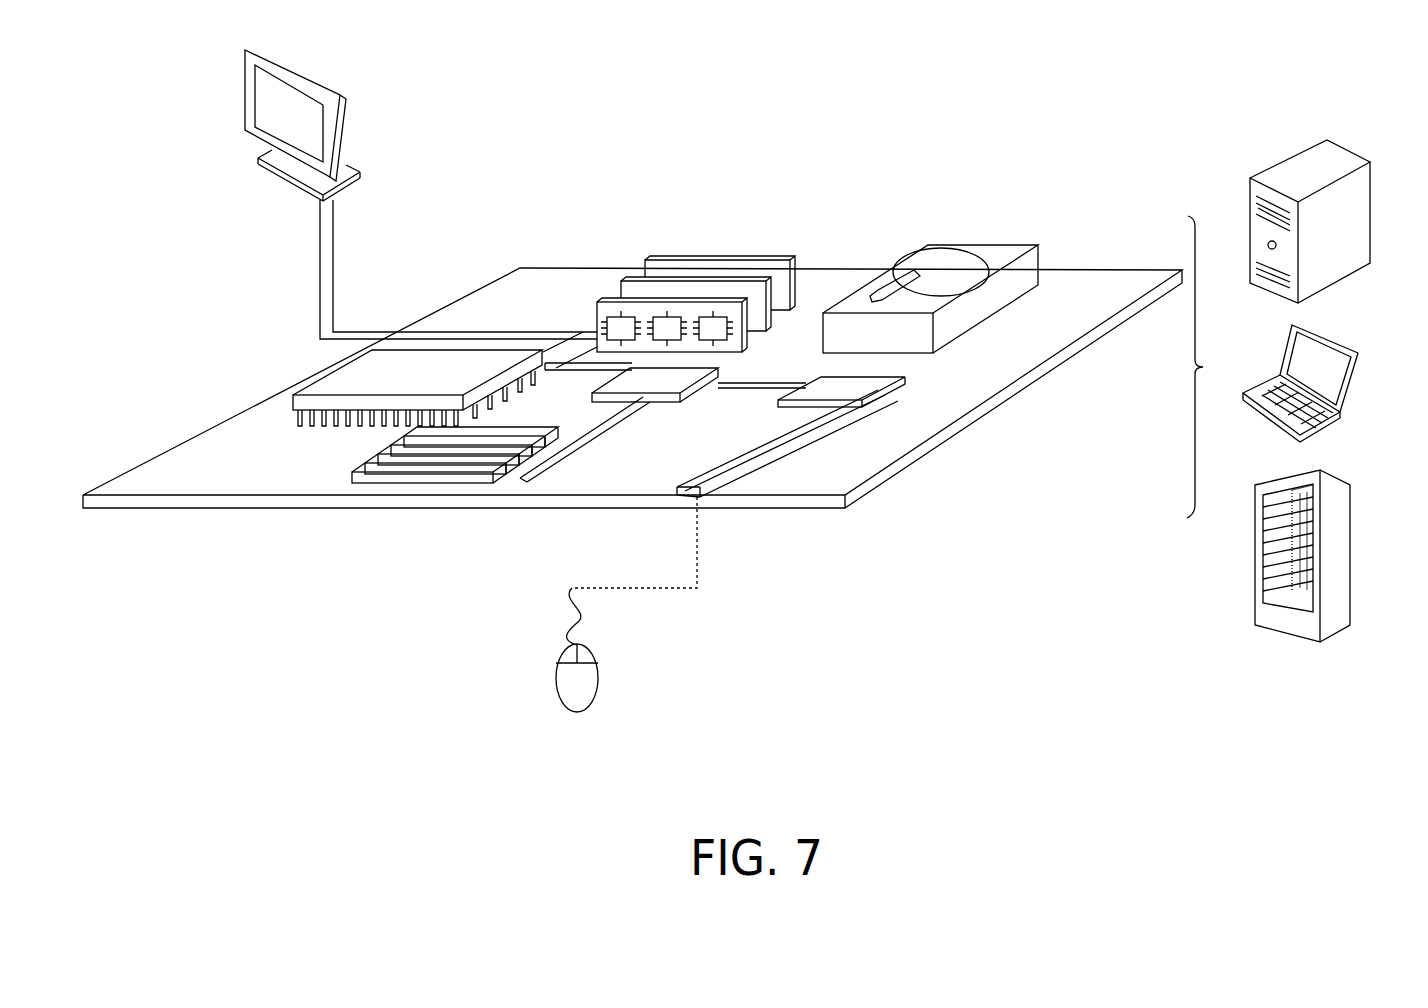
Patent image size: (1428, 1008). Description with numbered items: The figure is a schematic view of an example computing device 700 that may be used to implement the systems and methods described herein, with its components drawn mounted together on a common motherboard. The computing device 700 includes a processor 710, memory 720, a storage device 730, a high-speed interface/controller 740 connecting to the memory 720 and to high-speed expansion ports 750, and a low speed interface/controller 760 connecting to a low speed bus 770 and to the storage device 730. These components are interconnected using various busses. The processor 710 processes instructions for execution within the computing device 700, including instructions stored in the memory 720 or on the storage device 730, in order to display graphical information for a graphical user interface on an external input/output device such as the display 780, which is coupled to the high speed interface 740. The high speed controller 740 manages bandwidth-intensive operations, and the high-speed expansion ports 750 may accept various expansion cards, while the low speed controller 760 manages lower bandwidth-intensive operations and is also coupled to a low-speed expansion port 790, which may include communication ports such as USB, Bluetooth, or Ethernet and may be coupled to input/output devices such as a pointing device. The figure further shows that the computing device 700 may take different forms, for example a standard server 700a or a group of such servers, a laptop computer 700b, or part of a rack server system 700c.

The computing device 700 is at (799, 106).
The standard server 700a is at (1283, 158).
The laptop computer 700b is at (1338, 351).
The rack server system 700c is at (1344, 533).
The processor 710 is at (291, 397).
The memory 720 is at (714, 260).
The storage device 730 is at (980, 245).
The high-speed interface/controller 740 is at (658, 404).
The high-speed expansion ports 750 is at (352, 474).
The low speed interface/controller 760 is at (830, 386).
The low speed bus 770 is at (784, 448).
The display 780 is at (244, 98).
The low-speed expansion port 790 is at (711, 500).